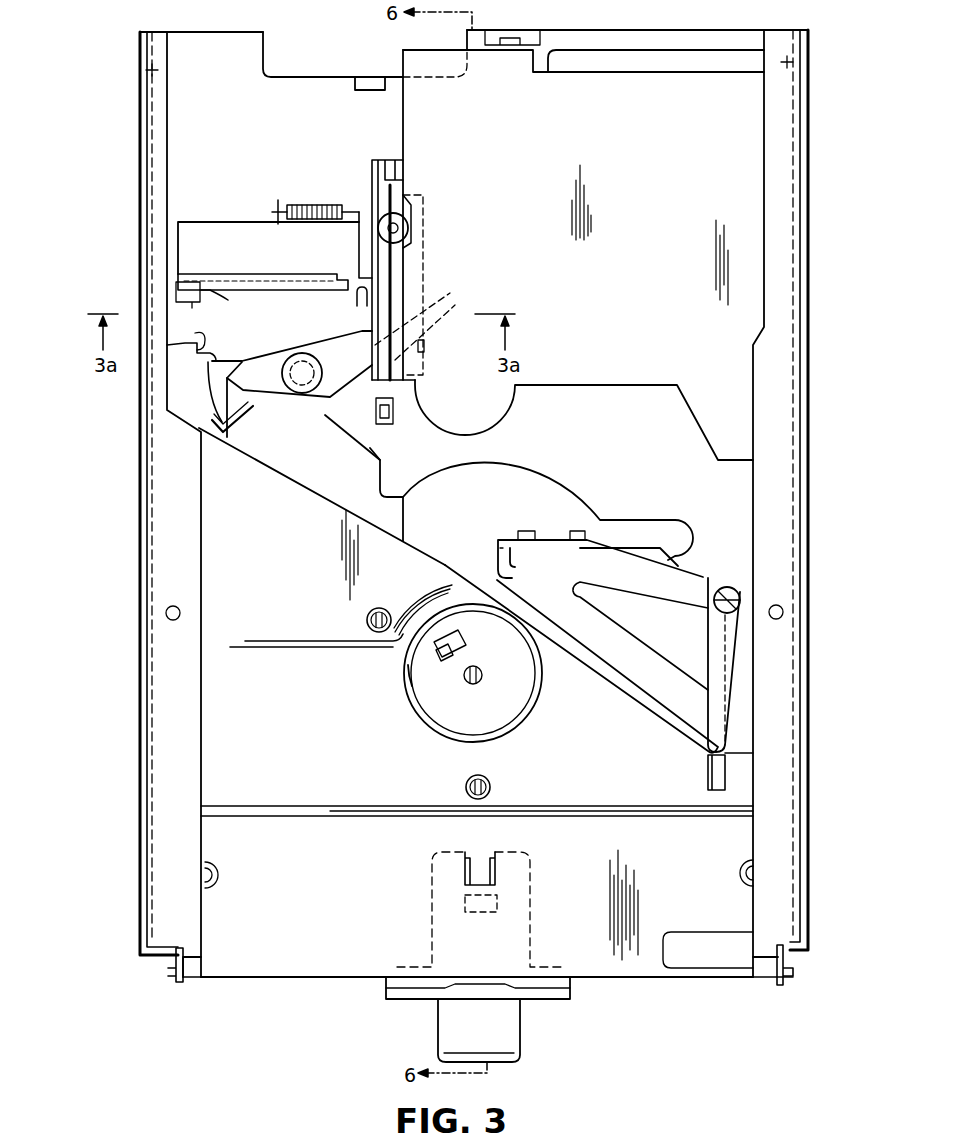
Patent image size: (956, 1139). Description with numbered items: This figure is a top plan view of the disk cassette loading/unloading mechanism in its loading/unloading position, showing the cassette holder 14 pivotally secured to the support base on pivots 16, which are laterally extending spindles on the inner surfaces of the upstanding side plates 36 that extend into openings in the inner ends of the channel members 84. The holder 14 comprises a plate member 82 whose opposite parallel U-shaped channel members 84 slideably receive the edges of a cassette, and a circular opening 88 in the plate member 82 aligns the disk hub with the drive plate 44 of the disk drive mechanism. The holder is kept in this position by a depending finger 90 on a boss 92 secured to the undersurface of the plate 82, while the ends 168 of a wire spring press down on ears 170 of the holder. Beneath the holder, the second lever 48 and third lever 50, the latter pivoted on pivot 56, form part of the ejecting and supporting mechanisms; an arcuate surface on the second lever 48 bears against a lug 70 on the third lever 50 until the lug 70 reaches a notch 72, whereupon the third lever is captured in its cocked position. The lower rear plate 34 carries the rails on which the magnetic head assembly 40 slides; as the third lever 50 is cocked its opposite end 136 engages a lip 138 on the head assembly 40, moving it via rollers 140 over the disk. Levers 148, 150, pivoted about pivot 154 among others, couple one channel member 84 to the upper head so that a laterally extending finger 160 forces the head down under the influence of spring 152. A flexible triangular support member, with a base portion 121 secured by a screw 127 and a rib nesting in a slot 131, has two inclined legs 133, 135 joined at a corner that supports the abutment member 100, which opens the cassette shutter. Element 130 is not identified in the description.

The disk cassette holder 14 is at (447, 563).
The pivots 16 is at (160, 72).
The rear plate 34 is at (262, 132).
The side plates 36 is at (138, 700).
The magnetic head assembly 40 is at (403, 108).
The drive plate 44 is at (520, 690).
The second lever 48 is at (196, 406).
The third lever 50 is at (274, 366).
The pivot 56 is at (298, 396).
The lug 70 is at (244, 413).
The notch 72 is at (191, 338).
The plate member 82 is at (345, 761).
The channel members 84 is at (193, 527).
The circular opening 88 is at (422, 680).
The depending finger 90 is at (487, 915).
The boss 92 is at (530, 884).
The abutment member 100 is at (503, 566).
The base portion 121 is at (712, 636).
The screw 127 is at (740, 586).
The shaft bushing 130 is at (515, 1027).
The slot 131 is at (712, 771).
The leg 133 is at (615, 660).
The leg 135 is at (650, 584).
The opposite end 136 is at (445, 298).
The lip 138 is at (426, 348).
The rollers 140 is at (410, 230).
The lever 148 is at (205, 292).
The lever 150 is at (352, 297).
The spring 152 is at (334, 204).
The pivot 154 is at (203, 310).
The finger 160 is at (176, 290).
The spring ends 168 is at (175, 964).
The ears 170 is at (196, 982).